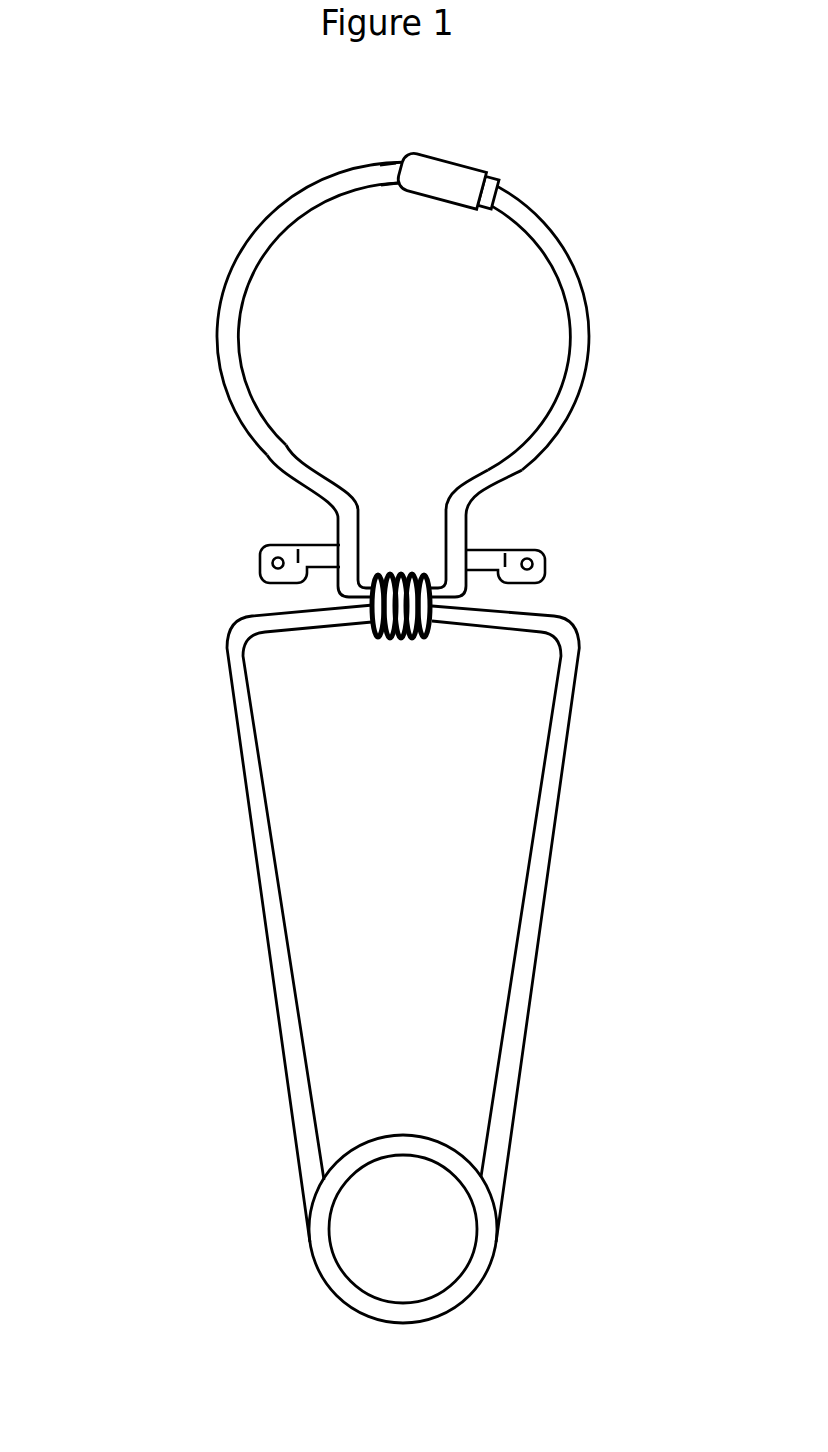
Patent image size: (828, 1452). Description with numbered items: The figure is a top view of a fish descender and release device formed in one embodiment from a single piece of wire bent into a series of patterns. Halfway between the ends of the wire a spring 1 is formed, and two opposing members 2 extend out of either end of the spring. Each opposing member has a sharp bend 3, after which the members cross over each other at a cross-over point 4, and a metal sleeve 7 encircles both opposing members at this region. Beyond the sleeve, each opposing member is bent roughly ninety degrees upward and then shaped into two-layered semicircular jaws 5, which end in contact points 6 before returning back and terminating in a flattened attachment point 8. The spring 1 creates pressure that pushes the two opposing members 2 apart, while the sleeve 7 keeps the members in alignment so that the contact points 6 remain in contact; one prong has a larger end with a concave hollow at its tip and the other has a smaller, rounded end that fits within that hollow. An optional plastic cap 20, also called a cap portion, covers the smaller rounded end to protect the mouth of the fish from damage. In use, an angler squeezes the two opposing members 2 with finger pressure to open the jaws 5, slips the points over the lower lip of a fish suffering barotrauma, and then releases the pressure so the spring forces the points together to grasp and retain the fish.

The spring 1 is at (478, 1262).
The opposing members 2 is at (617, 1049).
The sharp bend 3 is at (565, 650).
The cross-over point 4 is at (393, 632).
The jaws 5 is at (465, 523).
The contact points 6 is at (395, 162).
The sleeve 7 is at (430, 625).
The flattened attachment point 8 is at (262, 561).
The plastic cap 20 is at (453, 188).